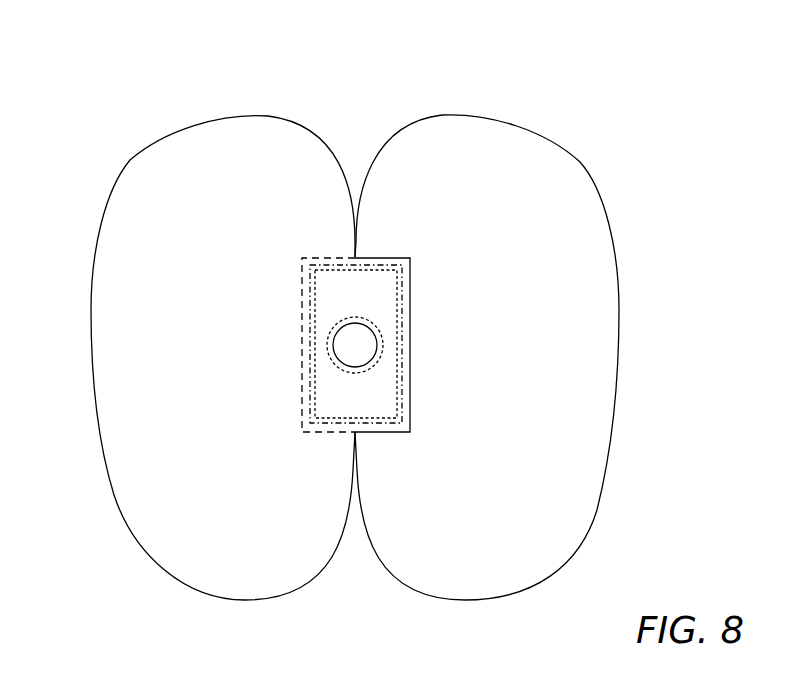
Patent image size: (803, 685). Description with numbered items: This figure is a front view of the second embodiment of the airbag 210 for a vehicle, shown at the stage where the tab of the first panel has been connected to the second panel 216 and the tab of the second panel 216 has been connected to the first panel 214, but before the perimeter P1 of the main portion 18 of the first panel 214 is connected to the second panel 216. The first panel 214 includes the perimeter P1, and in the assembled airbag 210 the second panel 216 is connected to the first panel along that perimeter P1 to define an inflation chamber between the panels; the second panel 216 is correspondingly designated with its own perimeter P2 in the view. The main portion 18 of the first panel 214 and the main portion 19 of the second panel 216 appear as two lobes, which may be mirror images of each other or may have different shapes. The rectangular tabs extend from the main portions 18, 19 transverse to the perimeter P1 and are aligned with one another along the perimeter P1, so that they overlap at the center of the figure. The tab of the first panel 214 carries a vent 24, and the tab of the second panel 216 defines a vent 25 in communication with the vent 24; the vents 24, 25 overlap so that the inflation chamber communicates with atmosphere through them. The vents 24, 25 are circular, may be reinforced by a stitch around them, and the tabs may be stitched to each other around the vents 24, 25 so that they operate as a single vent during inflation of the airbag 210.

The airbag 210 is at (588, 80).
The perimeter P1 is at (580, 162).
The second pillow portion P2 is at (128, 160).
The main portion 18 is at (593, 298).
The main portion 19 is at (116, 298).
The first lobe 214 is at (594, 405).
The second panel 216 is at (116, 405).
The vent 24 is at (356, 360).
The vent 25 is at (356, 345).